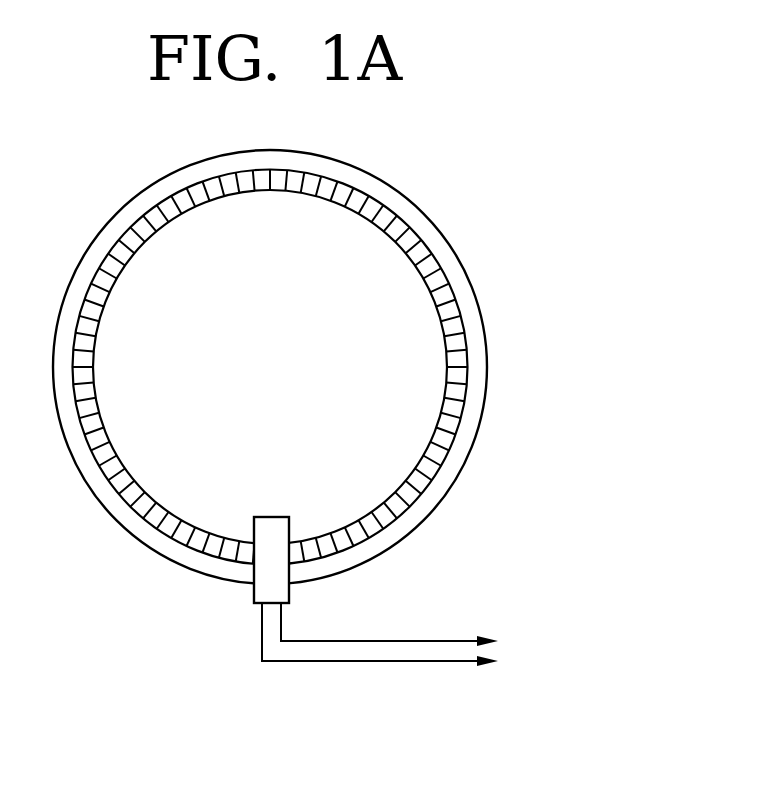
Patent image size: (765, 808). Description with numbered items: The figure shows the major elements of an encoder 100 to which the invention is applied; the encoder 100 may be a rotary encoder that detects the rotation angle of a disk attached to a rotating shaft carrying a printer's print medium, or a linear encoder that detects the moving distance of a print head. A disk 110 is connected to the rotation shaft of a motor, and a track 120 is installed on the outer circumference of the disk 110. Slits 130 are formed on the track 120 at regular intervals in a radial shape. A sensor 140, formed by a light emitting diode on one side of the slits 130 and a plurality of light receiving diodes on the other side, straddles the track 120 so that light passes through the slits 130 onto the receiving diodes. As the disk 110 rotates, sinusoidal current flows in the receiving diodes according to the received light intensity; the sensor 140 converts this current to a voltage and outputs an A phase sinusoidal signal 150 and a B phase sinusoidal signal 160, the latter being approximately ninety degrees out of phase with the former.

The encoder 100 is at (357, 423).
The disk 110 is at (490, 369).
The track 120 is at (463, 323).
The slits 130 is at (467, 403).
The sensor 140 is at (272, 517).
The A phase sinusoidal signal 150 is at (390, 640).
The B phase sinusoidal signal 160 is at (390, 663).